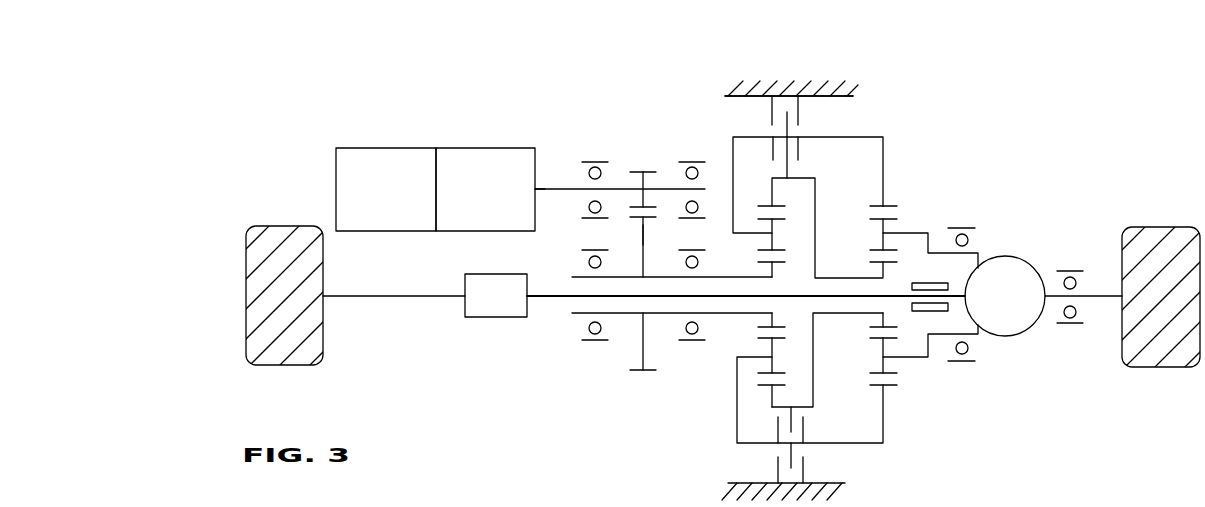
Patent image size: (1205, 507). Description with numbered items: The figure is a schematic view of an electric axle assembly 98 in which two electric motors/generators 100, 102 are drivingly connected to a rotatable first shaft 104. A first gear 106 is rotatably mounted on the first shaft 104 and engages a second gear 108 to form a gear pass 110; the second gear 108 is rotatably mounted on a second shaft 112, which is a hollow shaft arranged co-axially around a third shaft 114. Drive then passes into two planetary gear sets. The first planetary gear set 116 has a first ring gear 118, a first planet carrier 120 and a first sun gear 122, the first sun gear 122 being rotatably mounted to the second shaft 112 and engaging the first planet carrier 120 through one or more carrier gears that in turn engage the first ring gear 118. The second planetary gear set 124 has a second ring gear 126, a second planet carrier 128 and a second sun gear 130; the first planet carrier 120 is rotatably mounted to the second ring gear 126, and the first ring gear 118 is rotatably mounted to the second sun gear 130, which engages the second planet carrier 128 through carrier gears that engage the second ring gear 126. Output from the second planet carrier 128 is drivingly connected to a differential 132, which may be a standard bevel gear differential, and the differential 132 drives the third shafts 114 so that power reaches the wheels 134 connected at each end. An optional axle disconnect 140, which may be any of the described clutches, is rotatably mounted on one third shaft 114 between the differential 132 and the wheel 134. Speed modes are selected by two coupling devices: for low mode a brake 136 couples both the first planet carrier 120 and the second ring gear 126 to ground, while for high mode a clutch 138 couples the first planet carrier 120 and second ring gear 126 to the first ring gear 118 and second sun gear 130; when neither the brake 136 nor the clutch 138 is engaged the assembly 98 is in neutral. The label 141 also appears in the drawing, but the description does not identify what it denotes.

The electric axle assembly 98 is at (674, 78).
The electric motor/generator 100 is at (392, 147).
The electric motor/generator 102 is at (490, 147).
The first shaft 104 is at (560, 187).
The first gear 106 is at (633, 170).
The second gear 108 is at (643, 236).
The gear pass 110 is at (626, 218).
The second shaft 112 is at (571, 320).
The third shaft 114 is at (543, 298).
The first planetary gear set 116 is at (732, 366).
The first ring gear 118 is at (770, 193).
The first planet carrier 120 is at (735, 410).
The first sun gear 122 is at (762, 322).
The second planetary gear set 124 is at (908, 176).
The second ring gear 126 is at (883, 137).
The second planet carrier 128 is at (902, 233).
The second sun gear 130 is at (883, 275).
The differential 132 is at (1018, 258).
The wheels 134 is at (293, 227).
The brake 136 is at (801, 76).
The clutch 138 is at (812, 156).
The axle disconnect 140 is at (497, 320).
The axis 141 is at (692, 495).